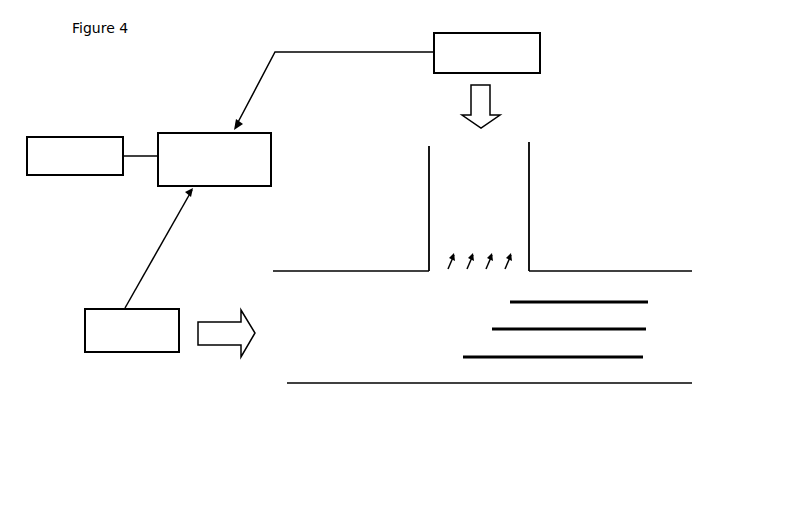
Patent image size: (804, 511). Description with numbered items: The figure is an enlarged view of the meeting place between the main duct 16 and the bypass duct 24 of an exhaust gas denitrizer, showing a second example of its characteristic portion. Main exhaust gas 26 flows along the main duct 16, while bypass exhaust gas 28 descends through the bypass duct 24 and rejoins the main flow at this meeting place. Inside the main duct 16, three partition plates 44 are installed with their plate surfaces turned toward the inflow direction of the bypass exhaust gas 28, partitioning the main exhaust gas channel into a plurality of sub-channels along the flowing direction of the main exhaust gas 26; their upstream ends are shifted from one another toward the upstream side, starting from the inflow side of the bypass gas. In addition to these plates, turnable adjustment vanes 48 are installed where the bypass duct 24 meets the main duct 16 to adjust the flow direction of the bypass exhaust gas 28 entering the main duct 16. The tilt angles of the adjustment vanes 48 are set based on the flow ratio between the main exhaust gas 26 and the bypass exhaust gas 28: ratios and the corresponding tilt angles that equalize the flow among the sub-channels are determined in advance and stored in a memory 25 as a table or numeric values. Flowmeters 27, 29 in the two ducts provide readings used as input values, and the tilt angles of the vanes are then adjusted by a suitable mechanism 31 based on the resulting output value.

The main duct 16 is at (389, 377).
The bypass duct 24 is at (429, 185).
The memory 25 is at (43, 129).
The main exhaust gas 26 is at (222, 348).
The flowmeter 27 is at (103, 355).
The bypass exhaust gas 28 is at (470, 110).
The flowmeter 29 is at (545, 52).
The mechanism 31 is at (173, 129).
The partition plates 44 is at (582, 357).
The adjustment vanes 48 is at (452, 262).